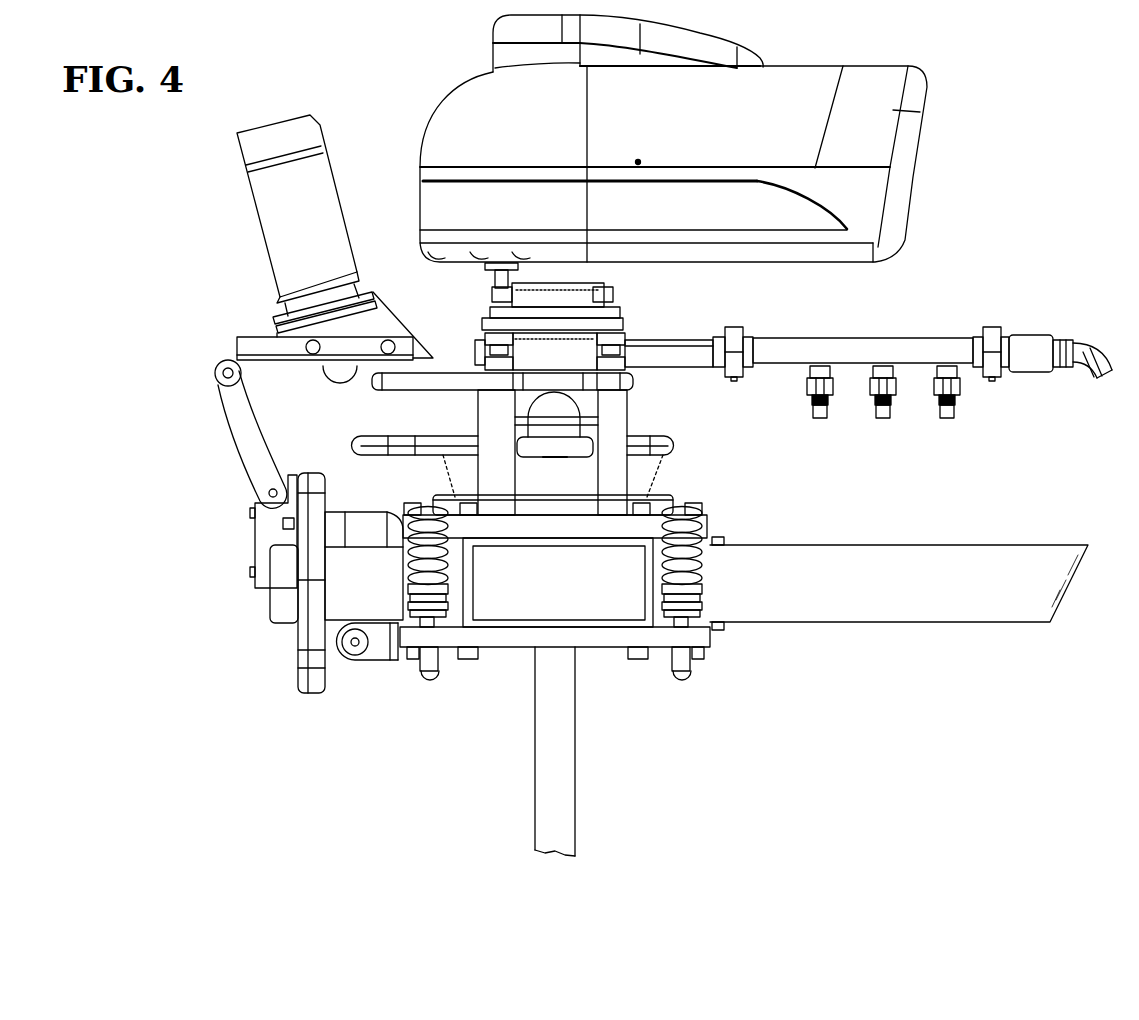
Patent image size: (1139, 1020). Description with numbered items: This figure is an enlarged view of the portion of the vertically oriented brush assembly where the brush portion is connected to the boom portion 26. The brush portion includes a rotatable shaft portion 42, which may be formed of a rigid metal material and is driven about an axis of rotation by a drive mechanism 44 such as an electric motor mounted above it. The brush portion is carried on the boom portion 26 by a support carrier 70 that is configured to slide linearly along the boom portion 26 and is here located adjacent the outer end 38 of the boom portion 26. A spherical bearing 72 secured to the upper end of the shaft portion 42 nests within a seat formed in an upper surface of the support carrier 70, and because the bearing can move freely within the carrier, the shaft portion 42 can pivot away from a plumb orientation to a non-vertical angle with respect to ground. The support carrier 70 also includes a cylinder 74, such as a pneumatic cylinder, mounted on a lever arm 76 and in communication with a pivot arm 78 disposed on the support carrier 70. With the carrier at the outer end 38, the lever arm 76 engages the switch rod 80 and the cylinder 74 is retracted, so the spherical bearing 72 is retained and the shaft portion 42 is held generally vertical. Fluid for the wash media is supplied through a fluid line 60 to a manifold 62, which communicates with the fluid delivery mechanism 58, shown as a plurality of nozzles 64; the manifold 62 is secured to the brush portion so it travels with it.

The boom portion 26 is at (948, 622).
The outer end 38 is at (385, 600).
The rotatable shaft portion 42 is at (568, 785).
The drive mechanism 44 is at (808, 90).
The fluid delivery mechanism 58 is at (975, 408).
The fluid line 60 is at (660, 346).
The manifold 62 is at (898, 348).
The nozzles 64 is at (947, 418).
The support carrier 70 is at (703, 625).
The spherical bearing 72 is at (652, 488).
The cylinder 74 is at (272, 228).
The lever arm 76 is at (255, 342).
The pivot arm 78 is at (367, 436).
The switch rod 80 is at (250, 440).